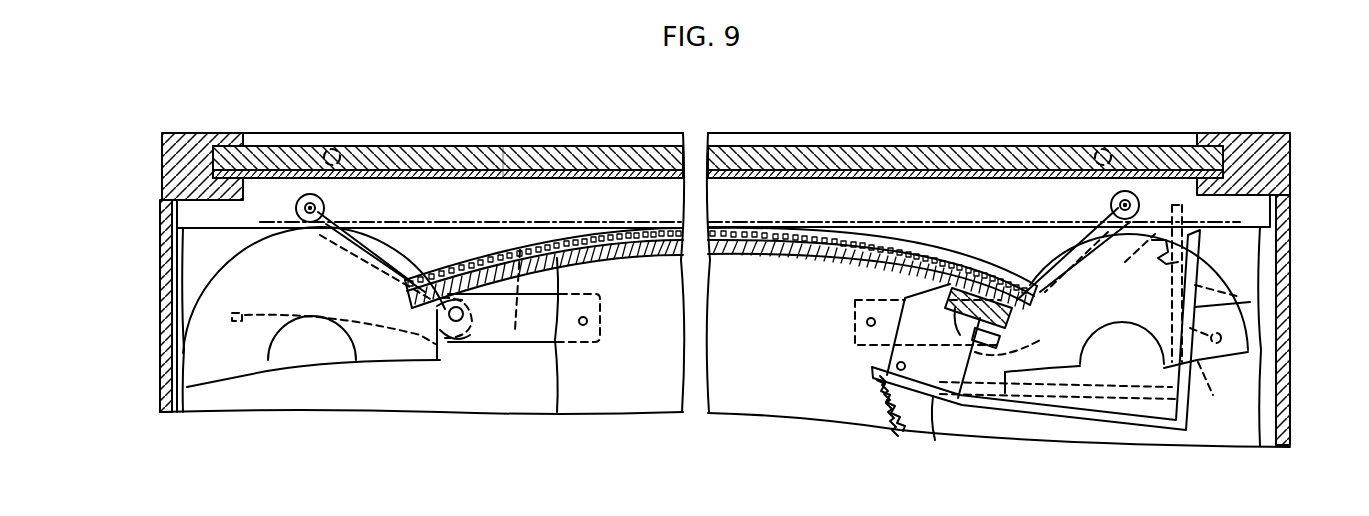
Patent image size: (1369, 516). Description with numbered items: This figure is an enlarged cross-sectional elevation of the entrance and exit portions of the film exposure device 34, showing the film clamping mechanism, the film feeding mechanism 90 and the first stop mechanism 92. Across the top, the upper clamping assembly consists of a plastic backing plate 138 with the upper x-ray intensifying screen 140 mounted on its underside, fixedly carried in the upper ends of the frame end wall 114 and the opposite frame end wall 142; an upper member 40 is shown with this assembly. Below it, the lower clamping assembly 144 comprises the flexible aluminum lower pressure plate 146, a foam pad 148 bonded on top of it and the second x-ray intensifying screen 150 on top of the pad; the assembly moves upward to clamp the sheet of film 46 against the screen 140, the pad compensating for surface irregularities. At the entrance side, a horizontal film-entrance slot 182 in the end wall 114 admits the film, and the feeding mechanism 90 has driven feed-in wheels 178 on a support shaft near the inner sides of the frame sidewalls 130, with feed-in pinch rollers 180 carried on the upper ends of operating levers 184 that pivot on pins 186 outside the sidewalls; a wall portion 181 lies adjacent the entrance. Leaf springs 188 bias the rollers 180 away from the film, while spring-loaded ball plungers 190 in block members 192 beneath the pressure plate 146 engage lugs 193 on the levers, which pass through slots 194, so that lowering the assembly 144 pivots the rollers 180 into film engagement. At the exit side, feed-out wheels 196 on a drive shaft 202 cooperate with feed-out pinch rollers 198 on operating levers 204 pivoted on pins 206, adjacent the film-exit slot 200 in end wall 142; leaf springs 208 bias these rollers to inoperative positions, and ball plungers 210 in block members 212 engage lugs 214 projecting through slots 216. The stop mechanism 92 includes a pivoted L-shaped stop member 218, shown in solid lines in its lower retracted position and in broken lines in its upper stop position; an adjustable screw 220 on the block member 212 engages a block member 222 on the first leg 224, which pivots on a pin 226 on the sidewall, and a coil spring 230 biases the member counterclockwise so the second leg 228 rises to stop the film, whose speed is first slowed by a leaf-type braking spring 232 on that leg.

The film exposure device 34 is at (762, 125).
The mounting plate 40 is at (460, 160).
The sheet of film 46 is at (588, 170).
The film feeding mechanism 90 is at (407, 195).
The first stop mechanism 92 is at (1118, 440).
The frame end wall 114 is at (160, 405).
The frame sidewall 130 is at (180, 405).
The backing plate 138 is at (543, 172).
The upper x-ray intensifying screen 140 is at (503, 152).
The frame end wall 142 is at (1283, 432).
The lower clamping assembly 144 is at (545, 282).
The lower pressure plate 146 is at (633, 258).
The foam pad 148 is at (628, 240).
The second x-ray intensifying screen 150 is at (594, 236).
The film feed-in wheel 178 is at (243, 370).
The feed-in pinch roller 180 is at (300, 195).
The inner wall 181 is at (173, 232).
The film-entrance slot 182 is at (327, 352).
The operating lever 184 is at (357, 168).
The pin 186 is at (587, 326).
The leaf spring 188 is at (280, 312).
The spring-loaded ball plunger 190 is at (470, 308).
The block member 192 is at (430, 290).
The lug 193 is at (445, 342).
The slot 194 is at (522, 240).
The feed-out wheel 196 is at (1060, 353).
The feed-out pinch roller 198 is at (1138, 195).
The film-exit slot 200 is at (1288, 225).
The drive shaft 202 is at (1137, 362).
The operating lever 204 is at (1085, 195).
The pin 206 is at (866, 322).
The leaf spring 208 is at (1214, 374).
The ball plunger 210 is at (1012, 341).
The block member 212 is at (995, 295).
The lug 214 is at (948, 331).
The slot 216 is at (978, 400).
The L-shaped stop member 218 is at (1093, 426).
The adjustable screw 220 is at (972, 290).
The block member 222 is at (895, 356).
The first leg 224 is at (1033, 417).
The pin 226 is at (910, 435).
The second leg 228 is at (1253, 312).
The coil spring 230 is at (880, 408).
The leaf-type braking spring 232 is at (1150, 273).